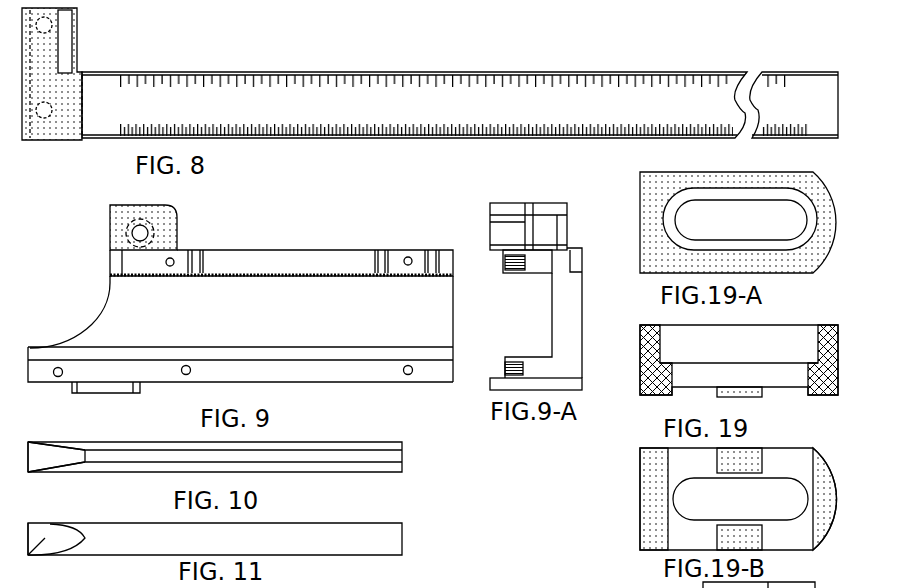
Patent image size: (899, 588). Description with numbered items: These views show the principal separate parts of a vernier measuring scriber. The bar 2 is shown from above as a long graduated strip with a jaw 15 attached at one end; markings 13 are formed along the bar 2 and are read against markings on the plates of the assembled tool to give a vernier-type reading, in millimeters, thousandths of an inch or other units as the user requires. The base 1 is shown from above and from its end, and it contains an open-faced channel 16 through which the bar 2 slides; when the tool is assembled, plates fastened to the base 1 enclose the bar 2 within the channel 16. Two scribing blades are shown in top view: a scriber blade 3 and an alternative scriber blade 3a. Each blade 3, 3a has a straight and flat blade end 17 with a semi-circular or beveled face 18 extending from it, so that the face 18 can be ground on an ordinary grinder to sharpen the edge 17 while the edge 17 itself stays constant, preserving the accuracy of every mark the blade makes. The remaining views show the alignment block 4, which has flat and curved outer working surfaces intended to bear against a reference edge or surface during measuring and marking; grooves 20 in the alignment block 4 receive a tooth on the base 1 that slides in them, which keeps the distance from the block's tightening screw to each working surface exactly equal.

In FIG. 9A, the base 1 is at (563, 323).
In FIG. 8, the bar 2 is at (210, 72).
In FIG. 10, the scriber blade 3 is at (382, 462).
In FIG. 11, the scriber blade 3a is at (347, 540).
In FIG. 19A, the alignment block 4 is at (640, 182).
In FIG. 19, the alignment block 4 is at (640, 388).
In FIG. 19B, the alignment block 4 is at (663, 488).
In FIG. 8, the markings 13 is at (477, 83).
In FIG. 8, the jaw 15 is at (43, 43).
In FIG. 9, the open-faced channel 16 is at (145, 313).
In FIG. 9A, the open-faced channel 16 is at (540, 325).
In FIG. 10, the blade end 17 is at (25, 450).
In FIG. 11, the blade end 17 is at (25, 532).
In FIG. 10, the beveled face 18 is at (48, 460).
In FIG. 11, the beveled face 18 is at (48, 540).
In FIG. 19A, the grooves 20 is at (715, 222).
In FIG. 19B, the grooves 20 is at (727, 497).